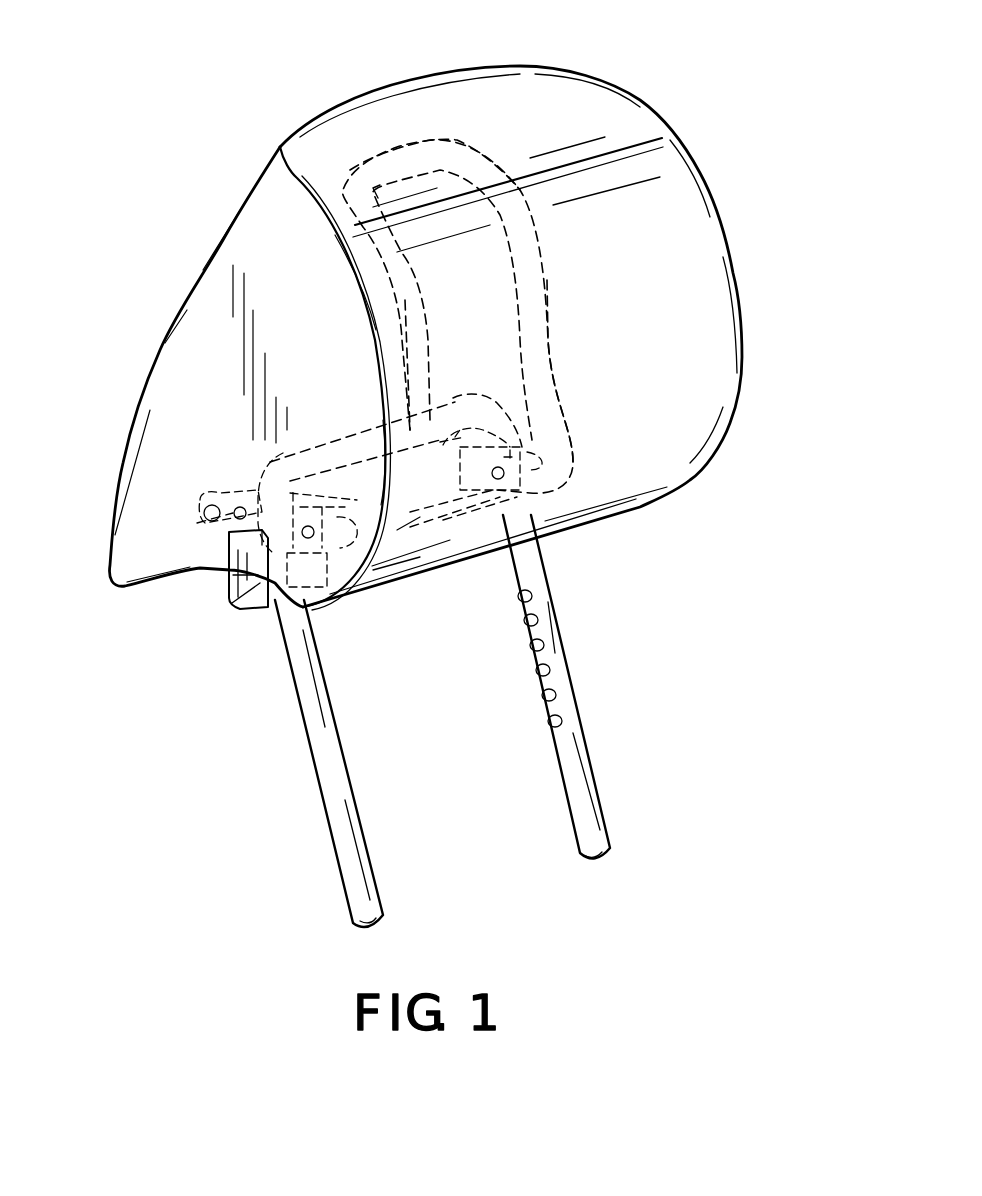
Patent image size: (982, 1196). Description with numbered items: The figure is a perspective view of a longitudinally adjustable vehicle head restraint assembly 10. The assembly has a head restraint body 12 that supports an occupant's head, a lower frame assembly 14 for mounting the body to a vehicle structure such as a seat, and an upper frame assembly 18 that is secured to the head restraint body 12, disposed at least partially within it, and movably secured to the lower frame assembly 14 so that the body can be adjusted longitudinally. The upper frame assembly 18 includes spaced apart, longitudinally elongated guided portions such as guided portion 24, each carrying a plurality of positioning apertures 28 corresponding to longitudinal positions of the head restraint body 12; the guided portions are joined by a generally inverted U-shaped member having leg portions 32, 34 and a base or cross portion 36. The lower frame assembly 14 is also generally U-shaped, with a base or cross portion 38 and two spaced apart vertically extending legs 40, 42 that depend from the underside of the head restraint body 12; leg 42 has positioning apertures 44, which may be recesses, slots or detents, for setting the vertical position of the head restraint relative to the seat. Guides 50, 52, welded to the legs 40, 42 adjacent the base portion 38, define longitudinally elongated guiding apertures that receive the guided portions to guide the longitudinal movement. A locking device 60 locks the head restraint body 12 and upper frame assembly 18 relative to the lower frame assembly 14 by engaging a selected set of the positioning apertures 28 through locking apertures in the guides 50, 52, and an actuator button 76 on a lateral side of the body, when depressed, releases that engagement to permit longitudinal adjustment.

The head restraint assembly 10 is at (209, 120).
The head restraint body 12 is at (704, 236).
The lower frame assembly 14 is at (287, 717).
The upper frame assembly 18 is at (565, 333).
The guided portion 24 is at (230, 487).
The positioning apertures 28 is at (243, 520).
The leg portion 32 is at (407, 305).
The leg portion 34 is at (537, 293).
The base or cross portion 36 is at (410, 160).
The base or cross portion 38 is at (440, 440).
The leg 40 is at (327, 782).
The leg 42 is at (560, 643).
The positioning apertures 44 is at (557, 720).
The guide 50 is at (317, 481).
The guide 52 is at (533, 432).
The locking device 60 is at (448, 541).
The actuator button 76 is at (240, 602).